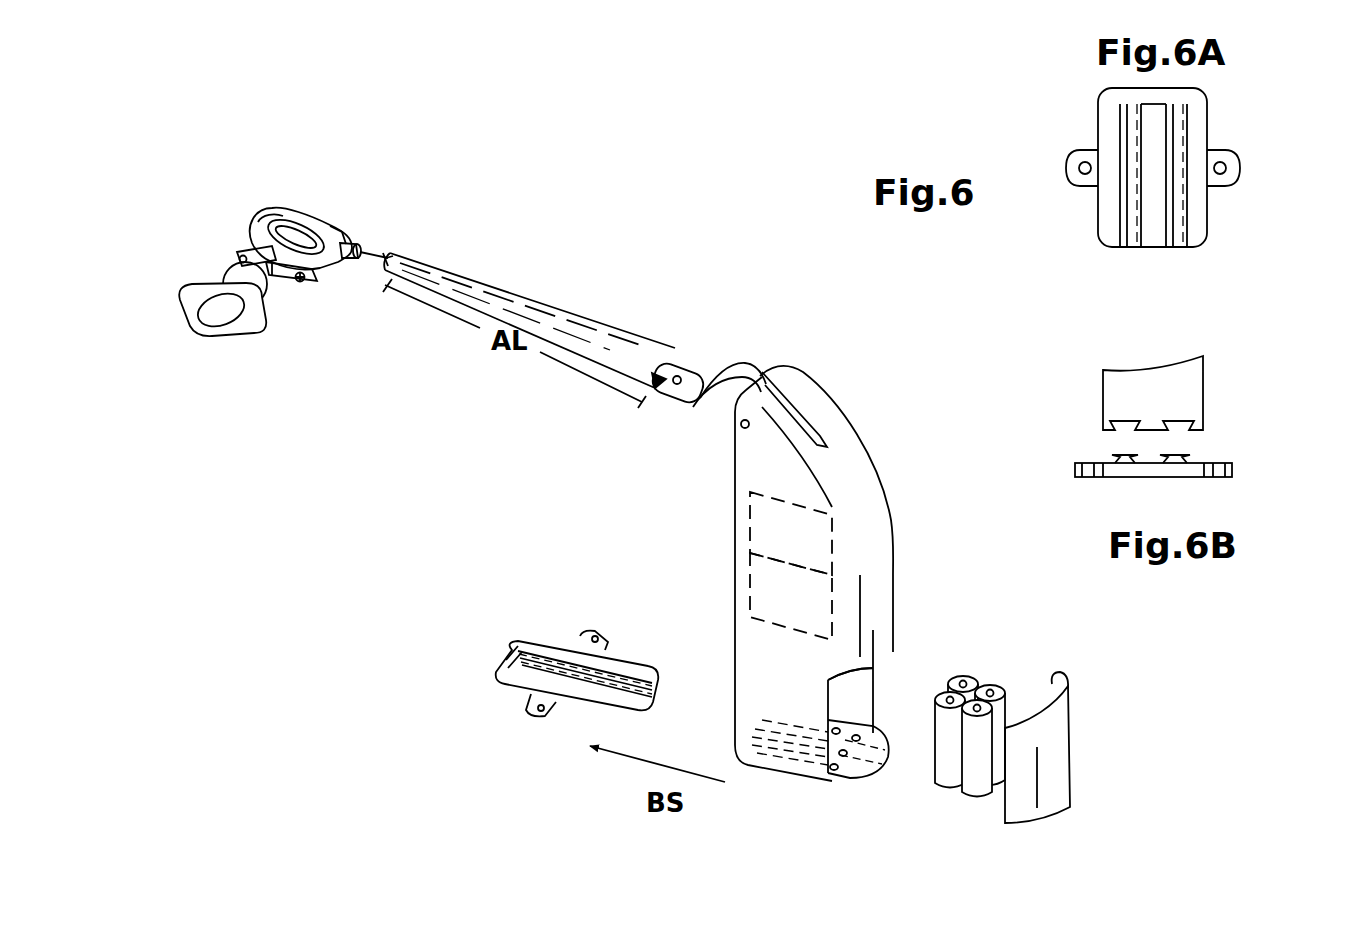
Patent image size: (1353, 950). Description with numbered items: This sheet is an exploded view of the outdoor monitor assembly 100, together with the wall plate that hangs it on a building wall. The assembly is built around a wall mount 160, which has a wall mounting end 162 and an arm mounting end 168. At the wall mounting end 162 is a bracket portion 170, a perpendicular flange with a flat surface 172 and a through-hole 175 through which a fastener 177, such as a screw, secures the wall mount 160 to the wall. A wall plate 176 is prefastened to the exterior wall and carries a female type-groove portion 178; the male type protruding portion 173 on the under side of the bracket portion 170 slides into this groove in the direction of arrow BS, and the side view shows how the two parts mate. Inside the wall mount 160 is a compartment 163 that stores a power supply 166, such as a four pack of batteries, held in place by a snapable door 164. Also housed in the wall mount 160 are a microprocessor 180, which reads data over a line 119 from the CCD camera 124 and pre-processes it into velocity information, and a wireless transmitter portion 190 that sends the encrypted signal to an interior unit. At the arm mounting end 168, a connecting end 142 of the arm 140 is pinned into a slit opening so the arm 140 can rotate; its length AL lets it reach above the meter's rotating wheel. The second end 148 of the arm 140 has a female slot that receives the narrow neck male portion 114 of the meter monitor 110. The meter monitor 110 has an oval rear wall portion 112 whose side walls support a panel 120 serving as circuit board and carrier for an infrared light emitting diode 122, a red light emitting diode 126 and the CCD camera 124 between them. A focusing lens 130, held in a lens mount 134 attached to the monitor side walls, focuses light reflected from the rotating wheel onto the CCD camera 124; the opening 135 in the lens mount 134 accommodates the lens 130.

In FIG. 6, the outdoor monitor assembly 100 is at (648, 118).
In FIG. 6, the meter monitor 110 is at (240, 104).
In FIG. 6, the rear wall portion 112 is at (283, 204).
In FIG. 6, the narrow neck male portion 114 is at (357, 243).
In FIG. 6, the line 119 is at (385, 254).
In FIG. 6, the panel 120 is at (248, 246).
In FIG. 6, the infrared light emitting diode 122 is at (303, 280).
In FIG. 6, the CCD camera 124 is at (272, 268).
In FIG. 6, the red light emitting diode 126 is at (240, 256).
In FIG. 6, the focusing lens 130 is at (231, 277).
In FIG. 6, the lens mount 134 is at (255, 328).
In FIG. 6, the aperture 135 is at (214, 313).
In FIG. 6, the arm 140 is at (602, 306).
In FIG. 6, the connecting end 142 is at (700, 368).
In FIG. 6, the second end 148 is at (392, 256).
In FIG. 6, the wall mount 160 is at (936, 580).
In FIG. 6, the wall mounting end 162 is at (847, 777).
In FIG. 6, the compartment 163 is at (862, 692).
In FIG. 6, the snapable door 164 is at (1052, 790).
In FIG. 6, the power supply 166 is at (1010, 678).
In FIG. 6, the arm mounting end 168 is at (789, 366).
In FIG. 6, the bracket portion 170 is at (774, 808).
In FIG. 6B, the bracket portion 170 is at (1152, 473).
In FIG. 6, the flat surface 172 is at (497, 666).
In FIG. 6, the male type protruding portion 173 is at (866, 768).
In FIG. 6B, the male type protruding portion 173 is at (1185, 458).
In FIG. 6, the through-hole 175 is at (532, 708).
In FIG. 6, the wall plate 176 is at (588, 700).
In FIG. 6A, the wall plate 176 is at (1060, 100).
In FIG. 6B, the wall plate 176 is at (1148, 392).
In FIG. 6A, the fastener 177 is at (1226, 163).
In FIG. 6A, the female type-groove portion 178 is at (1176, 203).
In FIG. 6B, the female type-groove portion 178 is at (1118, 431).
In FIG. 6, the microprocessor 180 is at (791, 533).
In FIG. 6, the wireless transmitter portion 190 is at (791, 596).